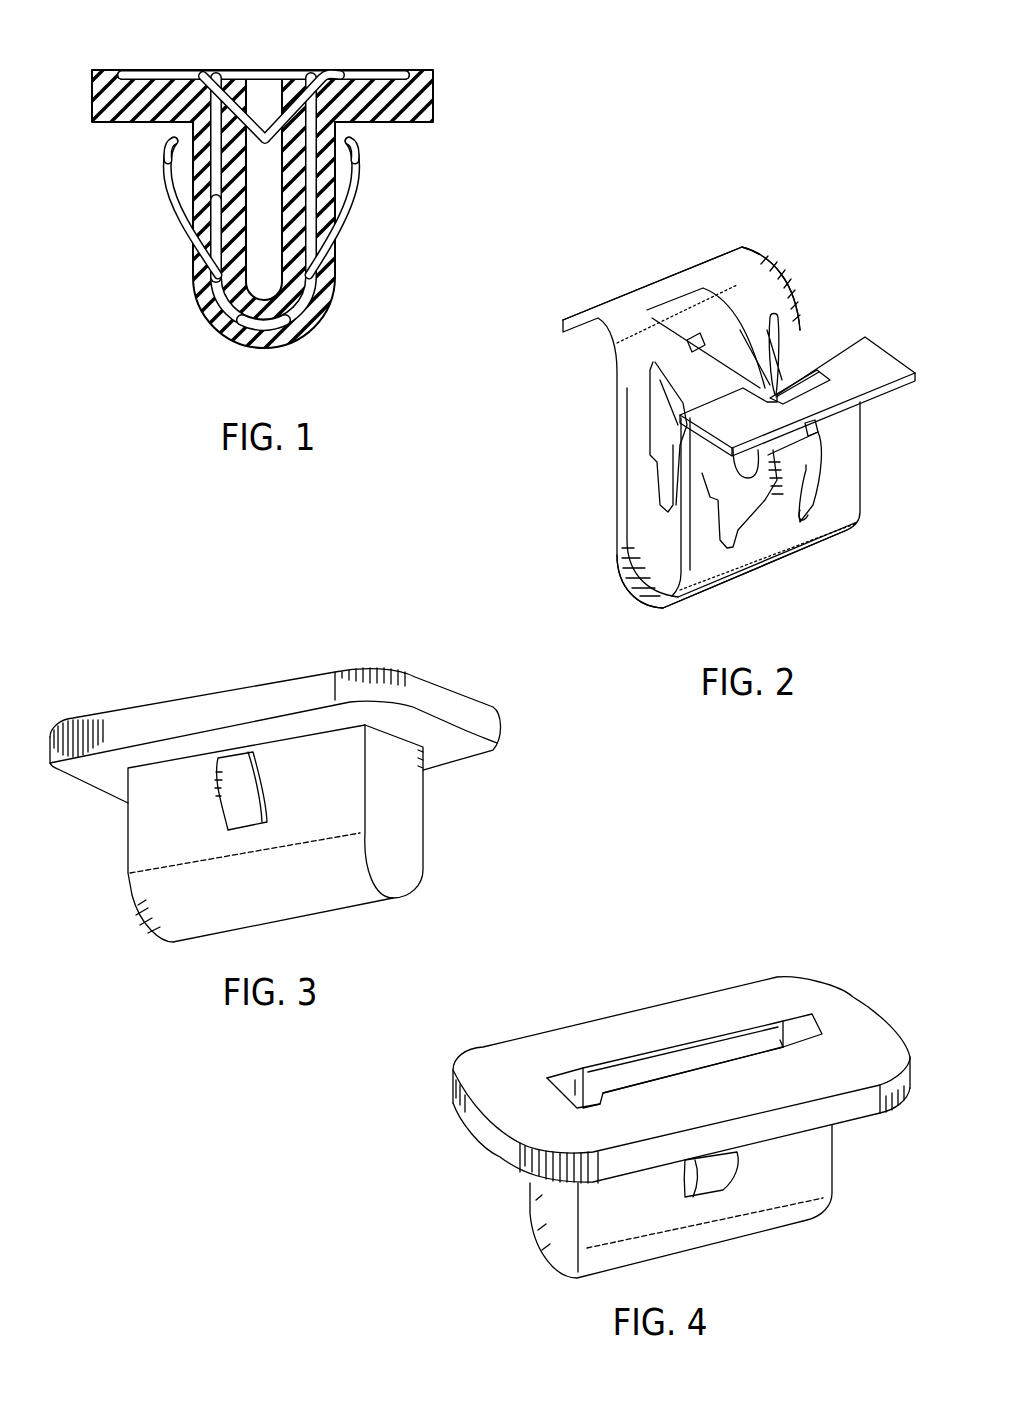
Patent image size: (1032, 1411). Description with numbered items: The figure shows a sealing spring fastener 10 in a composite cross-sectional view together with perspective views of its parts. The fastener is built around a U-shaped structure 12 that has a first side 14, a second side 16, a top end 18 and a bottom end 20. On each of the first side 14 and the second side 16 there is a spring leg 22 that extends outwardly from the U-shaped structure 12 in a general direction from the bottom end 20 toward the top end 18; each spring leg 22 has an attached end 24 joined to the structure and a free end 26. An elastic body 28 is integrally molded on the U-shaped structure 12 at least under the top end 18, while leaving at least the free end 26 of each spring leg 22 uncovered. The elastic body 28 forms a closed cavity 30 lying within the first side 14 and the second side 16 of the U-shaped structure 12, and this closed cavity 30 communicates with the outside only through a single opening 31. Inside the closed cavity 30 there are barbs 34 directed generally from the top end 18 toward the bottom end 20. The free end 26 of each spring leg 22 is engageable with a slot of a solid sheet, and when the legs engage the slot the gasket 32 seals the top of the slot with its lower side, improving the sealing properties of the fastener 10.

In FIG. 1, the sealing spring fastener 10 is at (503, 73).
In FIG. 3, the sealing spring fastener 10 is at (183, 636).
In FIG. 4, the sealing spring fastener 10 is at (777, 936).
In FIG. 1, the U-shaped structure 12 is at (263, 199).
In FIG. 2, the U-shaped structure 12 is at (830, 258).
In FIG. 2, the first side 14 is at (612, 470).
In FIG. 2, the second side 16 is at (872, 455).
In FIG. 1, the top end 18 is at (153, 74).
In FIG. 2, the top end 18 is at (730, 262).
In FIG. 1, the bottom end 20 is at (265, 342).
In FIG. 2, the bottom end 20 is at (728, 578).
In FIG. 1, the spring leg 22 is at (180, 200).
In FIG. 2, the spring leg 22 is at (665, 405).
In FIG. 3, the spring leg 22 is at (226, 804).
In FIG. 4, the spring leg 22 is at (718, 1178).
In FIG. 1, the attached end 24 is at (216, 270).
In FIG. 2, the attached end 24 is at (735, 490).
In FIG. 1, the free end 26 is at (170, 133).
In FIG. 2, the free end 26 is at (692, 352).
In FIG. 1, the elastic body 28 is at (320, 180).
In FIG. 3, the elastic body 28 is at (298, 833).
In FIG. 4, the elastic body 28 is at (713, 1201).
In FIG. 1, the closed cavity 30 is at (251, 223).
In FIG. 4, the closed cavity 30 is at (718, 1093).
In FIG. 1, the opening 31 is at (266, 66).
In FIG. 4, the opening 31 is at (665, 1062).
In FIG. 1, the gasket 32 is at (420, 100).
In FIG. 3, the gasket 32 is at (291, 690).
In FIG. 4, the gasket 32 is at (681, 1080).
In FIG. 1, the barbs 34 is at (241, 95).
In FIG. 2, the barbs 34 is at (697, 378).